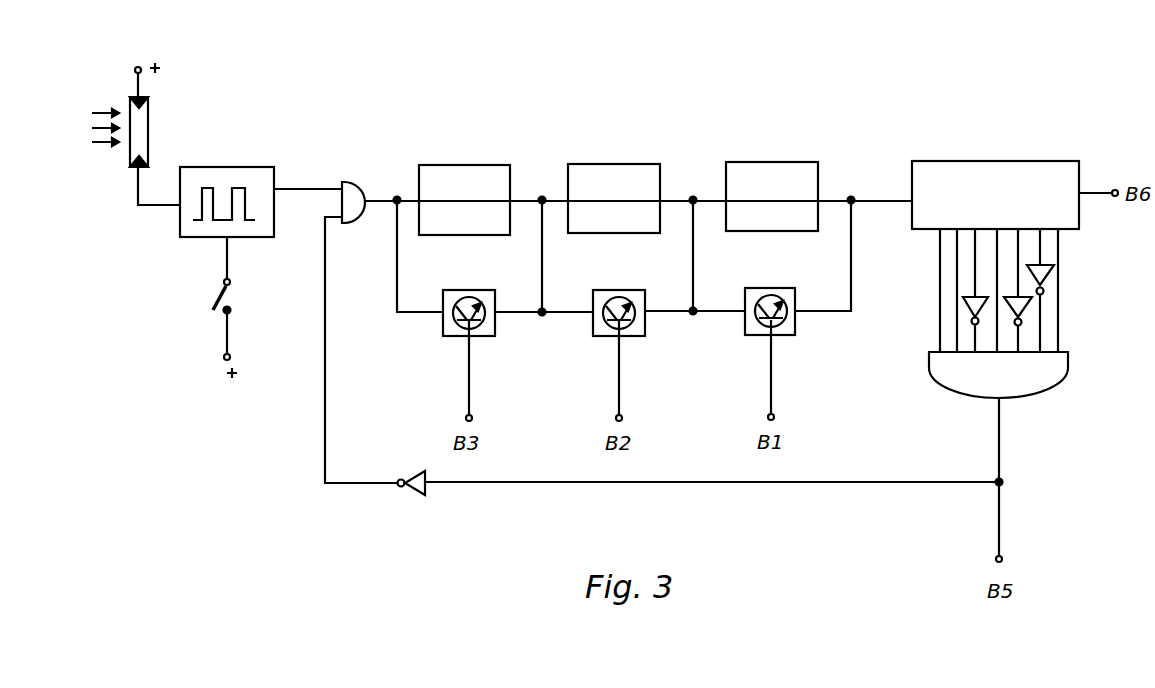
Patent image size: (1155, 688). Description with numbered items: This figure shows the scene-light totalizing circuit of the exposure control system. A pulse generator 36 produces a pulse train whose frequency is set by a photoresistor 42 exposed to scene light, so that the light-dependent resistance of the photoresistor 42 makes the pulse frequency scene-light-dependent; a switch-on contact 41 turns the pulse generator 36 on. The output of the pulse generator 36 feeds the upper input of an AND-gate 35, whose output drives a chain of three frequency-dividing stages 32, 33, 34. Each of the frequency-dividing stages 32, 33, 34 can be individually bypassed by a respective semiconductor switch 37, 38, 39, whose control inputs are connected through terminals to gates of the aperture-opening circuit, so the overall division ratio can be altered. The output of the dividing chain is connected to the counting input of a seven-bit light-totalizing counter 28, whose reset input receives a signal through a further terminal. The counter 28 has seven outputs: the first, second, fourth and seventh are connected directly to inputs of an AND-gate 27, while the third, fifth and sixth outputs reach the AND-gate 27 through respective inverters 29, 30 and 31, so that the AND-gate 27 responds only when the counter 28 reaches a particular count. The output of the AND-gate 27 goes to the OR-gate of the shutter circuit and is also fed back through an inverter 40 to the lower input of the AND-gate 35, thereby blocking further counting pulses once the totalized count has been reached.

The AND-gate 27 is at (960, 387).
The 7-bit counter 28 is at (940, 172).
The inverter 29 is at (963, 303).
The inverter 30 is at (1008, 313).
The inverter 31 is at (1043, 277).
The frequency-dividing stage 32 is at (750, 180).
The frequency-dividing stage 33 is at (592, 182).
The frequency-dividing stage 34 is at (443, 183).
The AND-gate 35 is at (352, 195).
The pulse generator 36 is at (250, 172).
The semiconductor switch 37 is at (745, 330).
The semiconductor switch 38 is at (593, 330).
The semiconductor switch 39 is at (443, 330).
The inverter 40 is at (413, 478).
The switch-on contact 41 is at (243, 306).
The photoresistor 42 is at (148, 132).